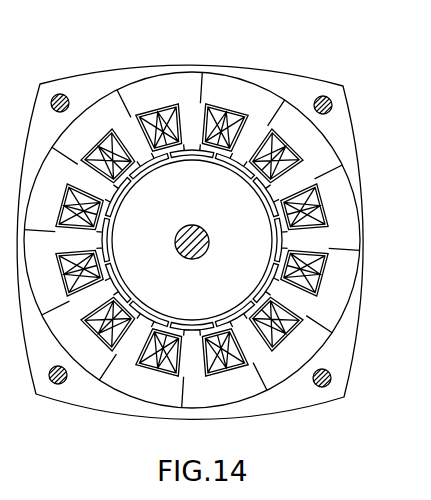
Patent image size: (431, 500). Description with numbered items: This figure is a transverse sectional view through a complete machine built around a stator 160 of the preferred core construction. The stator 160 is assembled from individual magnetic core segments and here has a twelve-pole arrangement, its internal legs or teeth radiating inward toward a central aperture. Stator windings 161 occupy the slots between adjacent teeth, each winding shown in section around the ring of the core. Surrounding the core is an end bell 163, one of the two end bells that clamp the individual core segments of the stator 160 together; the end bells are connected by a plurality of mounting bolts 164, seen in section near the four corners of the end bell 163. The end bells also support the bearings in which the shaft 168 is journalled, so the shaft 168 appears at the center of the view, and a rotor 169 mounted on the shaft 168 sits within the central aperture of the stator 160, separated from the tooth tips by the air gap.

The stator 160 is at (233, 98).
The stator windings 161 is at (283, 162).
The end bell 163 is at (108, 400).
The mounting bolts 164 is at (50, 386).
The shaft 168 is at (206, 228).
The rotor 169 is at (206, 296).